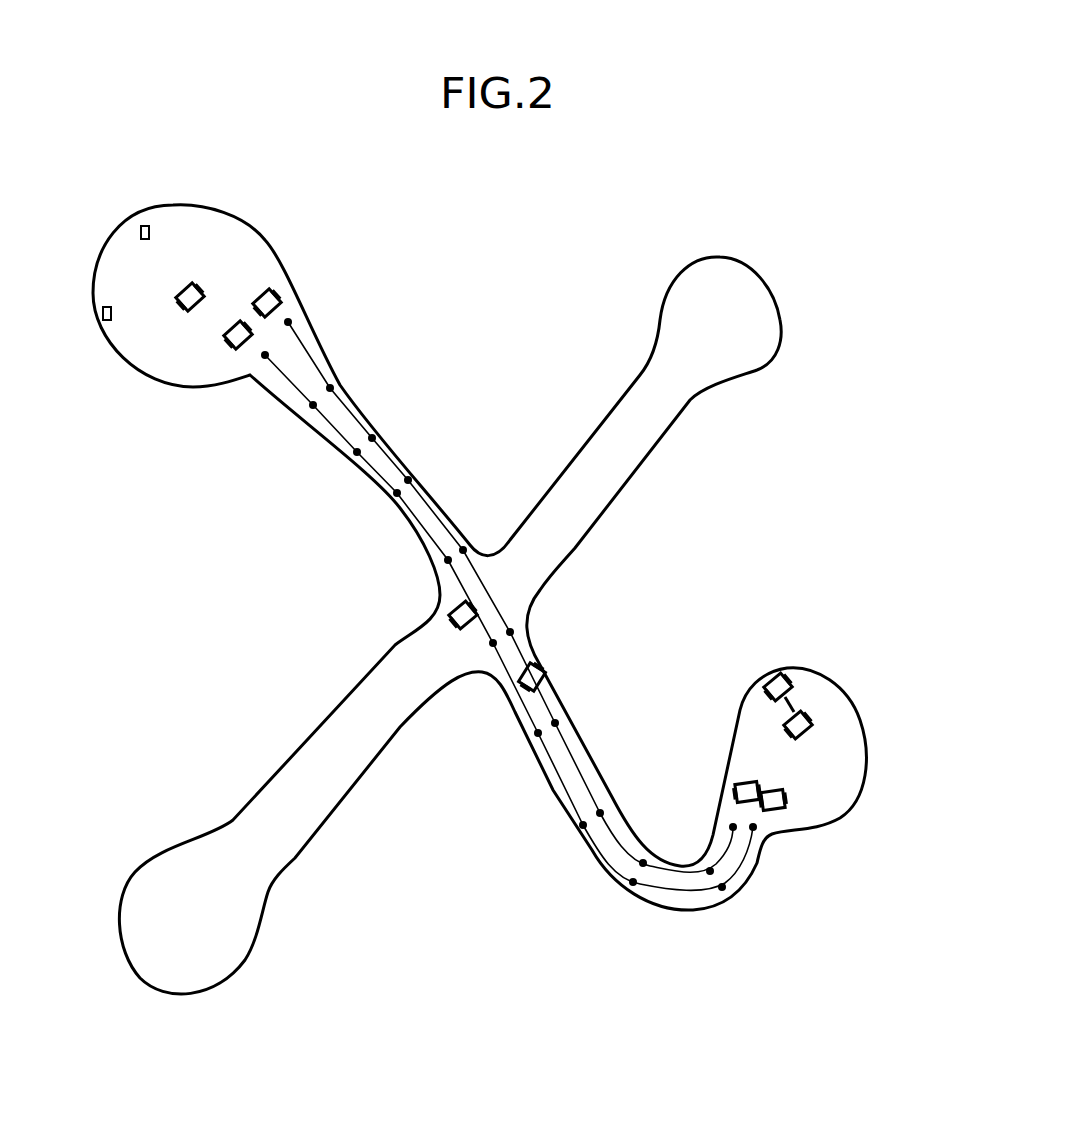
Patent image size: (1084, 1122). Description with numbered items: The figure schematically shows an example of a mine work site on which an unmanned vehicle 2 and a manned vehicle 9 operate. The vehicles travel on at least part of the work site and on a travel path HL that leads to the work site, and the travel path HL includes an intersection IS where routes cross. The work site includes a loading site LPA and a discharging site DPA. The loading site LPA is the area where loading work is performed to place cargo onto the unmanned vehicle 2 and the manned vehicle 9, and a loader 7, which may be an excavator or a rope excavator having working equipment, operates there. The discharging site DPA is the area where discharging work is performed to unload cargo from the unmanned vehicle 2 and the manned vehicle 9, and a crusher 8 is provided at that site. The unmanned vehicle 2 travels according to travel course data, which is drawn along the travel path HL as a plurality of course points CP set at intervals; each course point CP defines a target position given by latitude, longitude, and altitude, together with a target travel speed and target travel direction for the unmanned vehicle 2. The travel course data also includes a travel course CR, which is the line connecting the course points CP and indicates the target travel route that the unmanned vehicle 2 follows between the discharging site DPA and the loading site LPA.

The unmanned vehicle 2 is at (236, 346).
The loader 7 is at (777, 675).
The crusher 8 is at (145, 224).
The manned vehicle 9 is at (270, 293).
The course point CP is at (406, 474).
The travel course CR is at (576, 768).
The intersection IS is at (481, 676).
The travel path HL is at (592, 870).
The discharging site DPA is at (226, 266).
The loading site LPA is at (845, 778).